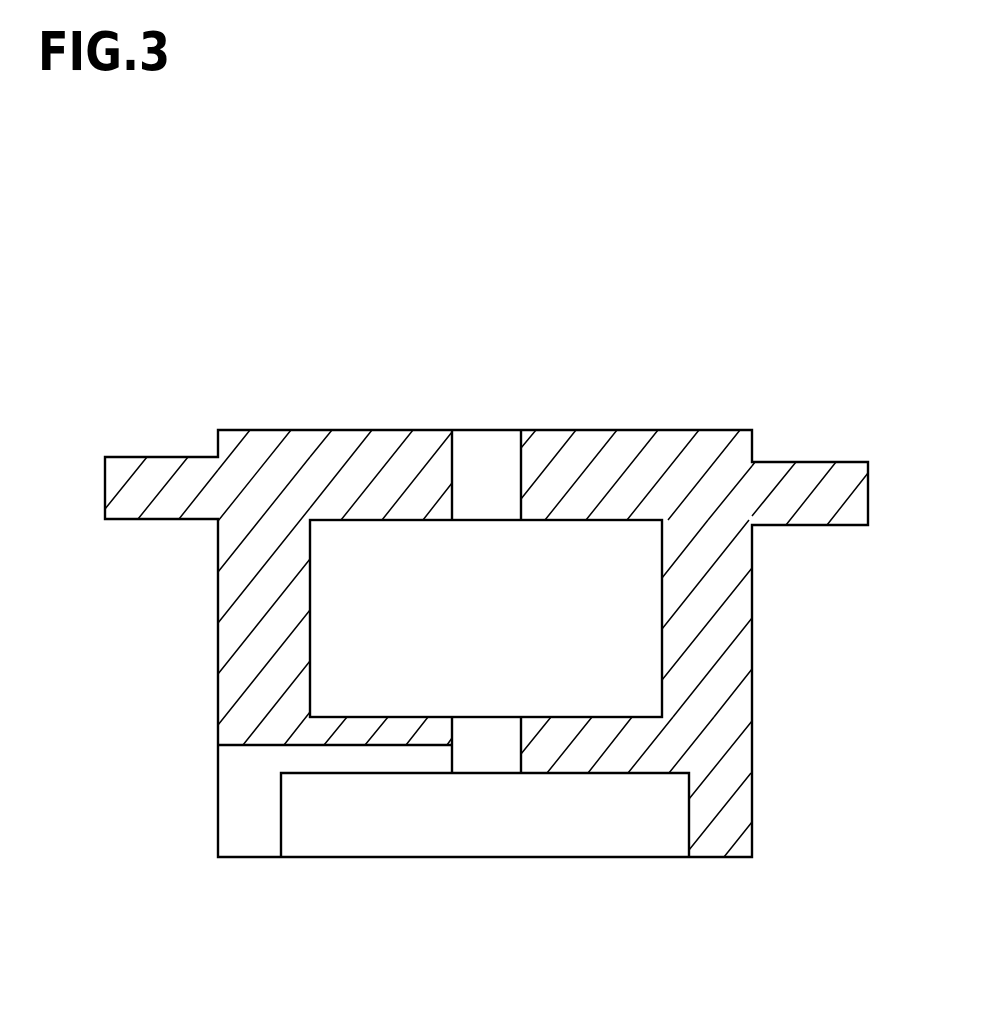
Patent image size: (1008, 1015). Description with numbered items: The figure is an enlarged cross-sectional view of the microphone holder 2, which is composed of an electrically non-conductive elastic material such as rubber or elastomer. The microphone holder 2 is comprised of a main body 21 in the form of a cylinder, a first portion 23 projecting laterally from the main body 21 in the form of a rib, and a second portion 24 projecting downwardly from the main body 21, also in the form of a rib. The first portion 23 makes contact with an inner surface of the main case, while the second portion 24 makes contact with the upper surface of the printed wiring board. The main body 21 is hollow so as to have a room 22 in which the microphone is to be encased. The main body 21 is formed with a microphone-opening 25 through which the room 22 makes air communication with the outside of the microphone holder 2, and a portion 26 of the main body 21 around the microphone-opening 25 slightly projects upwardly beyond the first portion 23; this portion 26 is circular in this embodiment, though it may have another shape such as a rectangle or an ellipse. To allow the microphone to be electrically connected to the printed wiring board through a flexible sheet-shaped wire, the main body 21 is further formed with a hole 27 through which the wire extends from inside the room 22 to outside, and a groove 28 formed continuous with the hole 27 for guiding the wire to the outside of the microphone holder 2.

The microphone holder 2 is at (259, 264).
The main body 21 is at (217, 642).
The room 22 is at (662, 672).
The first portion 23 is at (845, 462).
The second portion 24 is at (722, 858).
The microphone-opening 25 is at (521, 482).
The portion around the microphone-opening 26 is at (667, 433).
The hole 27 is at (521, 743).
The groove 28 is at (367, 747).